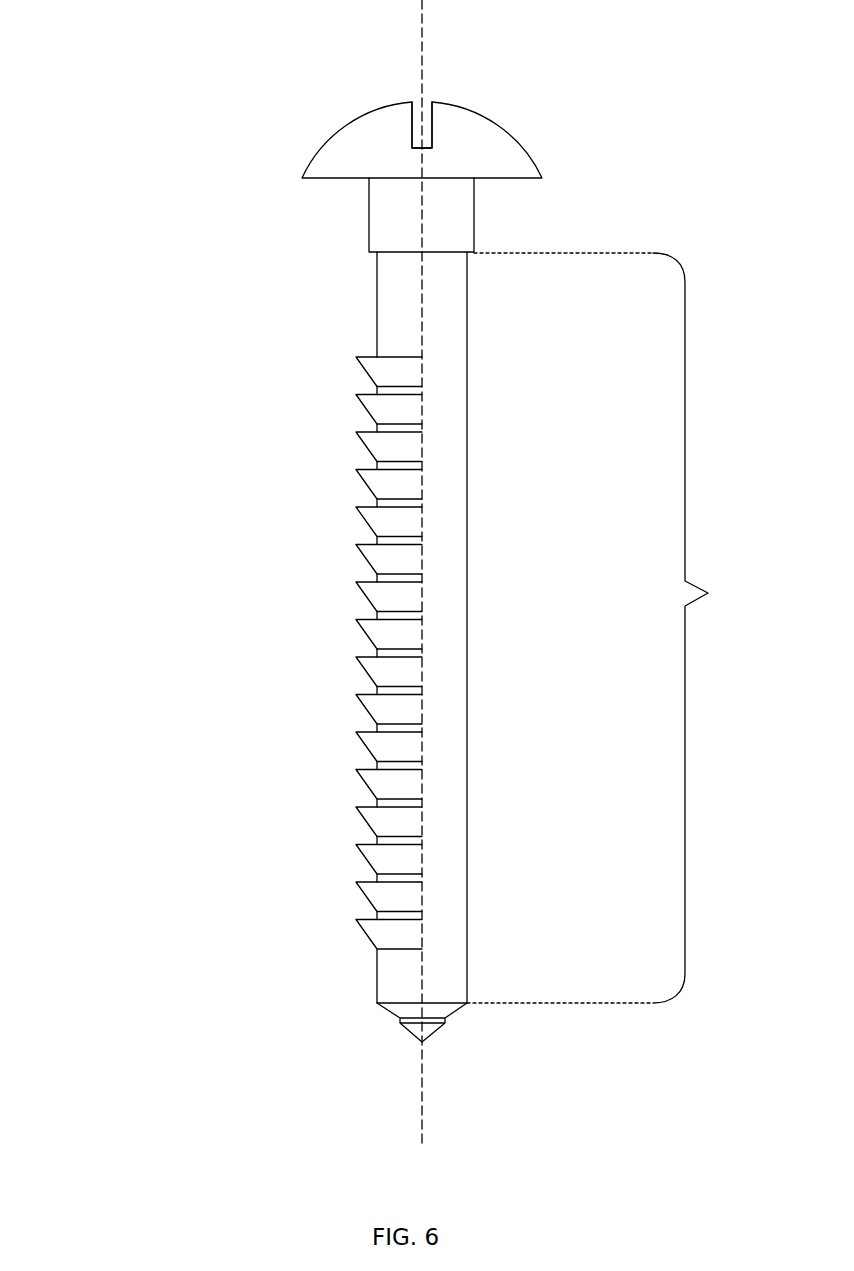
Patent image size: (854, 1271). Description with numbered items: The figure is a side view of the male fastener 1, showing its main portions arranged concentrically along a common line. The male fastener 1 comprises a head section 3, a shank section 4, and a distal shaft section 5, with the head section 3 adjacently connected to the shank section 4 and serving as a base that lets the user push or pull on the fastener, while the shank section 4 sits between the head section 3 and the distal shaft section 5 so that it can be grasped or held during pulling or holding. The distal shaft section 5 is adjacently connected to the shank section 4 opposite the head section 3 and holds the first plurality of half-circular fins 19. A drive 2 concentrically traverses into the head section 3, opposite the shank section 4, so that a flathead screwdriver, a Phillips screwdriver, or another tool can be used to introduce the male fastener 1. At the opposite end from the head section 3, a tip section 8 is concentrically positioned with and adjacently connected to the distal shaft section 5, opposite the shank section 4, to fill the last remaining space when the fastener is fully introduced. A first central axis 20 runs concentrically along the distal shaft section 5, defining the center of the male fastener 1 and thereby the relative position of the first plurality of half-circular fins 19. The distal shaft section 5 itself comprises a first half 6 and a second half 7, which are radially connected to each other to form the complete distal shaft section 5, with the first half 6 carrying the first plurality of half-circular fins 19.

The male fastener 1 is at (120, 541).
The drive 2 is at (416, 100).
The head section 3 is at (517, 150).
The shank section 4 is at (462, 218).
The distal shaft section 5 is at (598, 628).
The first half 6 is at (382, 984).
The second half 7 is at (455, 769).
The tip section 8 is at (401, 1020).
The first plurality of half-circular fins 19 is at (370, 446).
The first central axis 20 is at (422, 1121).